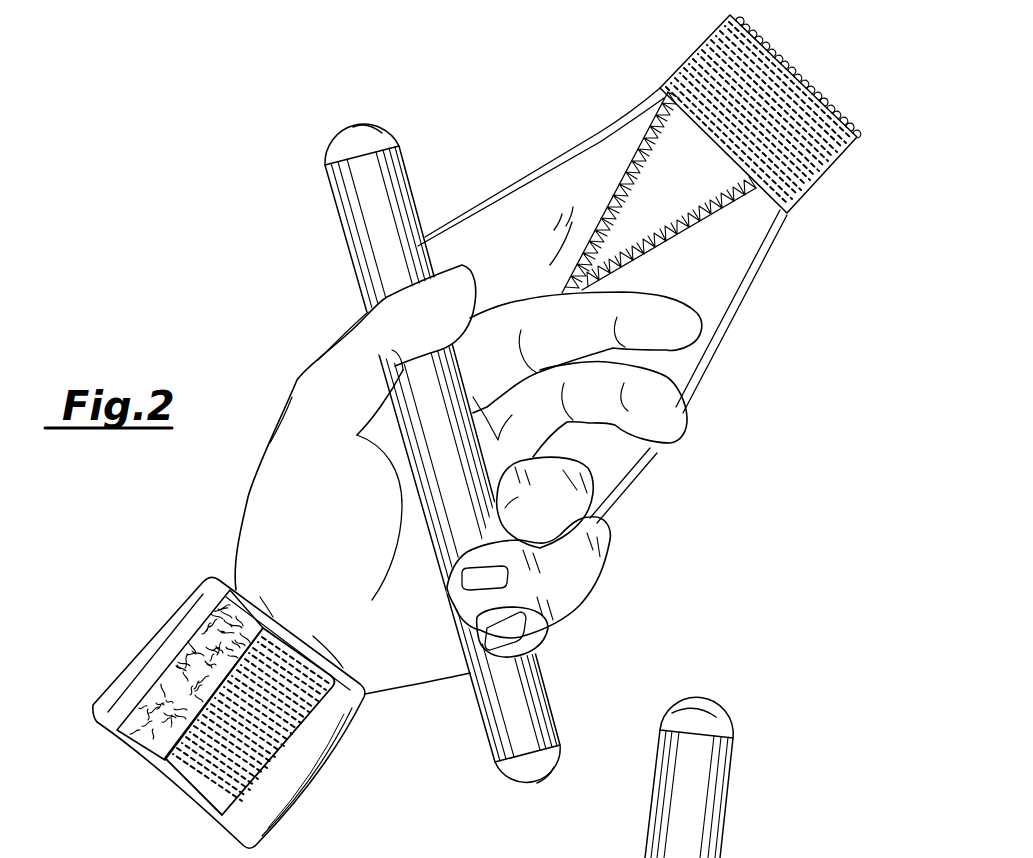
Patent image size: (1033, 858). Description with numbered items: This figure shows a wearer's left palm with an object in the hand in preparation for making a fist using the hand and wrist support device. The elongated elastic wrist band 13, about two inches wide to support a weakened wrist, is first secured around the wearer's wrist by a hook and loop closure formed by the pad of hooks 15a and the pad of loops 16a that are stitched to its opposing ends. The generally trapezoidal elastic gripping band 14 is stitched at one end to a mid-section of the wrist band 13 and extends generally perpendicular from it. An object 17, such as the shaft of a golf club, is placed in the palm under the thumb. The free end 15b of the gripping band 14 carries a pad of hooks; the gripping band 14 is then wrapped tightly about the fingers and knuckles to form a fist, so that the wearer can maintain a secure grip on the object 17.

The wrist band 13 is at (170, 663).
The gripping band 14 is at (727, 253).
The pad of hooks 15a is at (205, 787).
The free end of gripping band with pad of hooks 15b is at (783, 107).
The pad of loops 16a is at (150, 732).
The object 17 is at (372, 168).